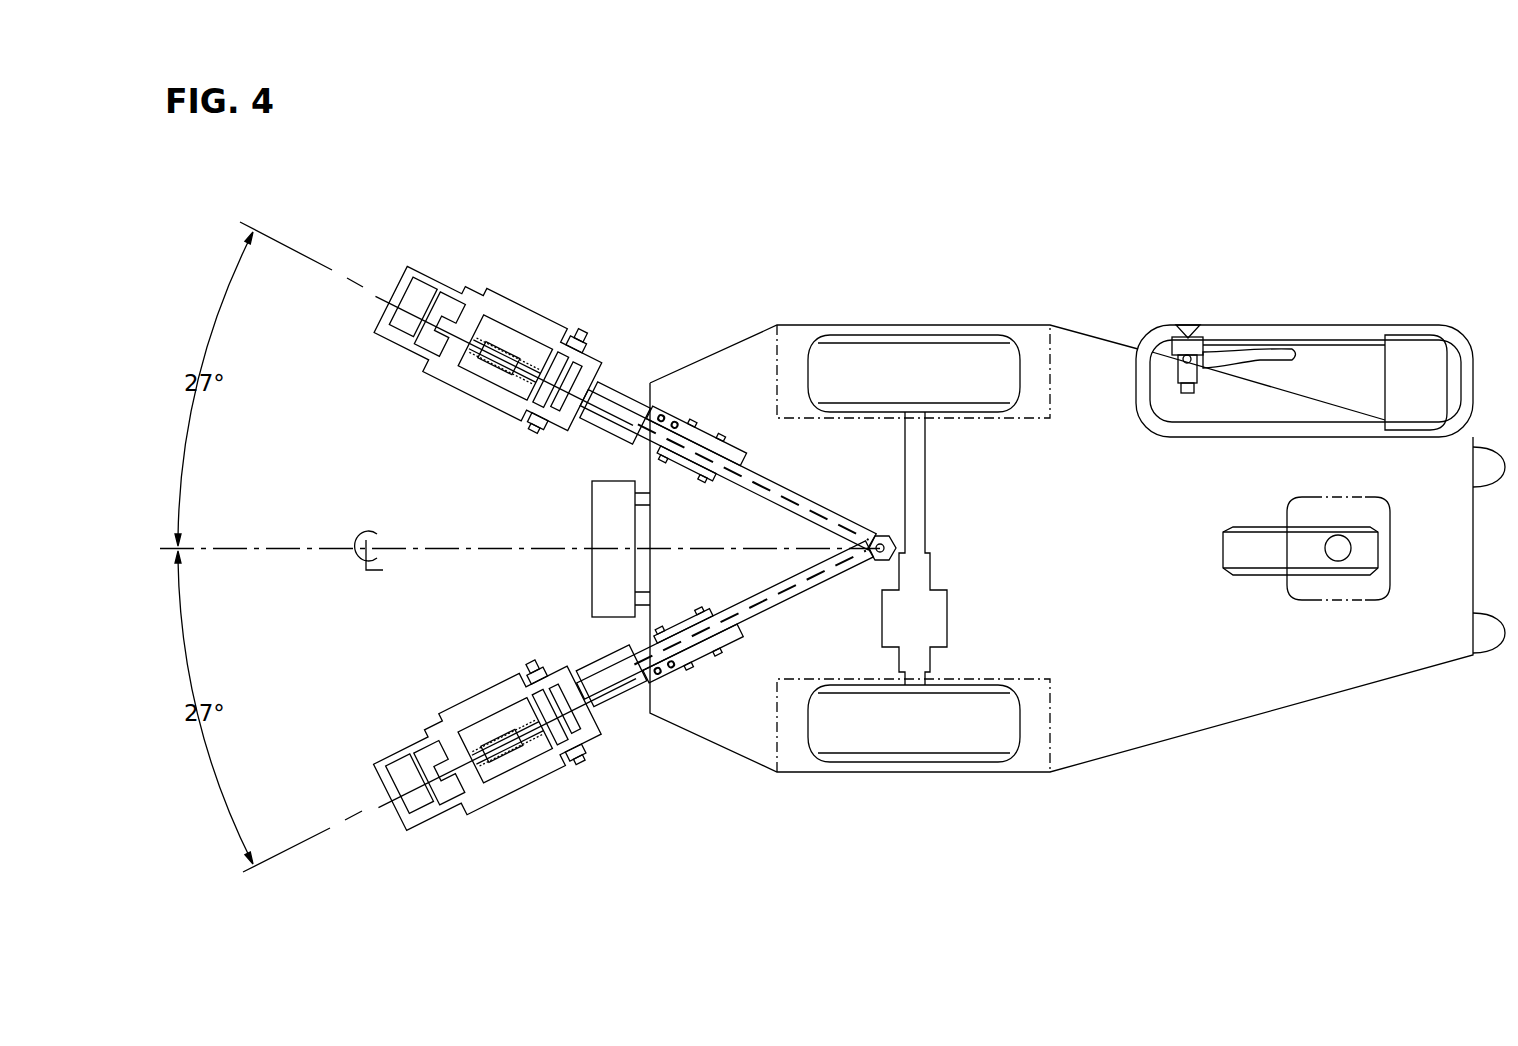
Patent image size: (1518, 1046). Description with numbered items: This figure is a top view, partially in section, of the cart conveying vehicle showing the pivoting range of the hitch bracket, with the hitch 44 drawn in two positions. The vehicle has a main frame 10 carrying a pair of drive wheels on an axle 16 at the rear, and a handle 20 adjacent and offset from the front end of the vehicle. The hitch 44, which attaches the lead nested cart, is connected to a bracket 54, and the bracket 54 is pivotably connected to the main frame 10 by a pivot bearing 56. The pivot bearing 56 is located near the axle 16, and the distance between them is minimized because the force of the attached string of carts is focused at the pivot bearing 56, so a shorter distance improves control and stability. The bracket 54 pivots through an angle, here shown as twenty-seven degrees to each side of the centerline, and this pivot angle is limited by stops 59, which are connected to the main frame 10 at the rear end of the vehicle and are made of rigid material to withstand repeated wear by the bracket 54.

The main frame 10 is at (1078, 331).
The axle 16 is at (928, 522).
The handle 20 is at (1342, 325).
The hitch 44 is at (518, 792).
The bracket 54 is at (742, 632).
The pivot bearing 56 is at (872, 562).
The stops 59 is at (650, 410).